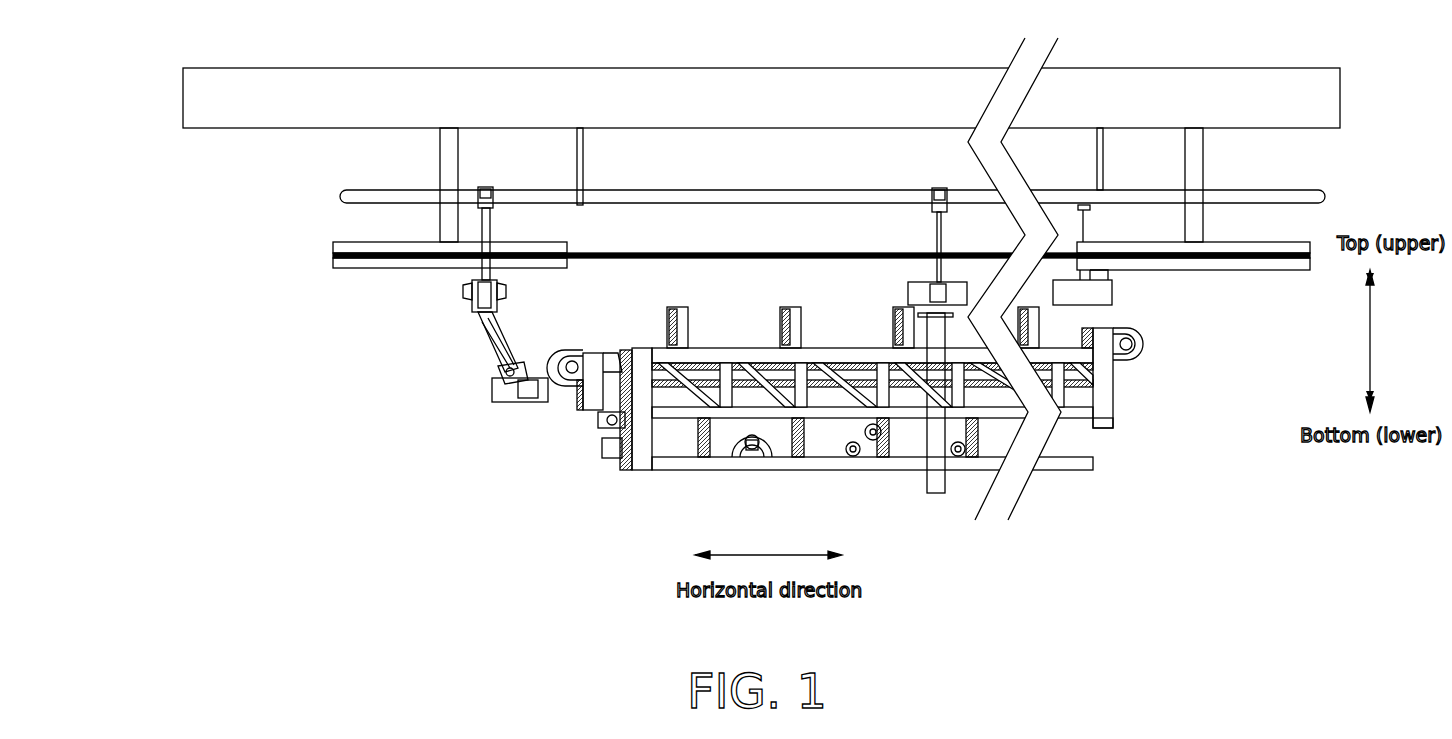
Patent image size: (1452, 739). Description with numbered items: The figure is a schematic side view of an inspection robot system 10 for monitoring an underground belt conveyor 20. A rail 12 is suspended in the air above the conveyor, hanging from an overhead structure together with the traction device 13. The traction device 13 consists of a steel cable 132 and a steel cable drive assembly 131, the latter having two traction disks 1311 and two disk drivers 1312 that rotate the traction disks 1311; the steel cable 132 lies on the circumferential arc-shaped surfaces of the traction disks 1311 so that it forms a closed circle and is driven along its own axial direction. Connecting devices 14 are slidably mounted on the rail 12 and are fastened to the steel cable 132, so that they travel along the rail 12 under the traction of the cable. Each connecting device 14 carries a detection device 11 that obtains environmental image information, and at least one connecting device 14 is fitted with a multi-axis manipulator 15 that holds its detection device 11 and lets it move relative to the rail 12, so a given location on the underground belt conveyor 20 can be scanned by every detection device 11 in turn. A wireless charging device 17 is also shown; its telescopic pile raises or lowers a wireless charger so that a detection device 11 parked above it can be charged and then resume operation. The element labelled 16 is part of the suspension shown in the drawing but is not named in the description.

The inspection robot system 10 is at (385, 518).
The detection device 11 is at (498, 395).
The rail 12 is at (357, 197).
The traction device 13 is at (735, 233).
The steel cable drive assembly 131 is at (754, 233).
The traction disk 1311 is at (343, 262).
The disk driver 1312 is at (453, 218).
The steel cable 132 is at (380, 255).
The connecting device 14 is at (477, 258).
The multi-axis manipulator 15 is at (488, 337).
The hanging post 16 is at (577, 138).
The wireless charging device 17 is at (930, 477).
The underground belt conveyor 20 is at (747, 358).